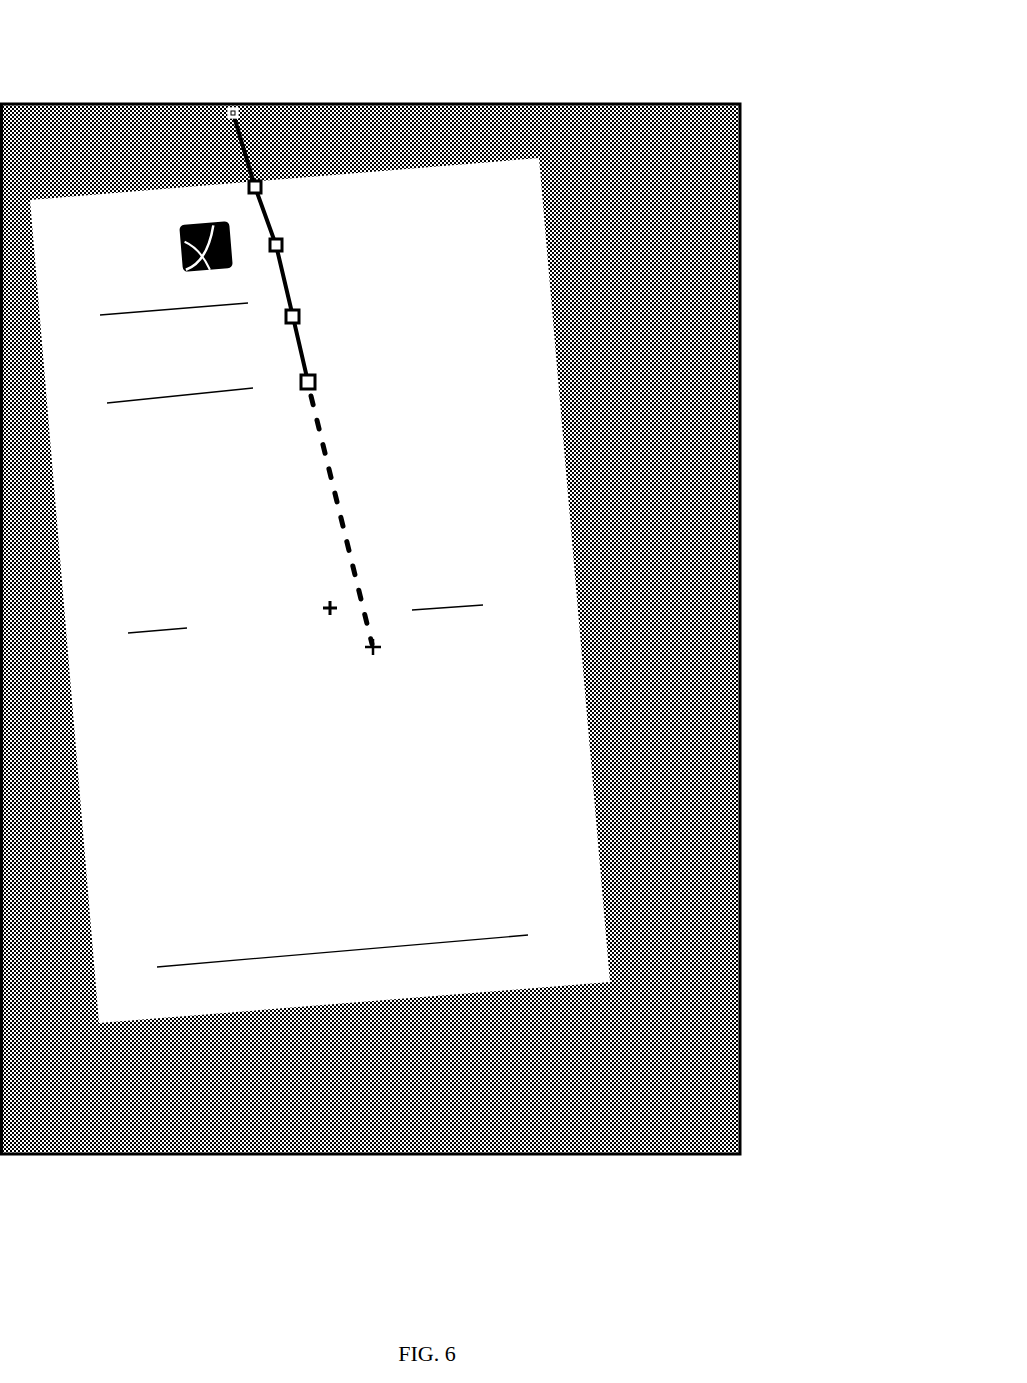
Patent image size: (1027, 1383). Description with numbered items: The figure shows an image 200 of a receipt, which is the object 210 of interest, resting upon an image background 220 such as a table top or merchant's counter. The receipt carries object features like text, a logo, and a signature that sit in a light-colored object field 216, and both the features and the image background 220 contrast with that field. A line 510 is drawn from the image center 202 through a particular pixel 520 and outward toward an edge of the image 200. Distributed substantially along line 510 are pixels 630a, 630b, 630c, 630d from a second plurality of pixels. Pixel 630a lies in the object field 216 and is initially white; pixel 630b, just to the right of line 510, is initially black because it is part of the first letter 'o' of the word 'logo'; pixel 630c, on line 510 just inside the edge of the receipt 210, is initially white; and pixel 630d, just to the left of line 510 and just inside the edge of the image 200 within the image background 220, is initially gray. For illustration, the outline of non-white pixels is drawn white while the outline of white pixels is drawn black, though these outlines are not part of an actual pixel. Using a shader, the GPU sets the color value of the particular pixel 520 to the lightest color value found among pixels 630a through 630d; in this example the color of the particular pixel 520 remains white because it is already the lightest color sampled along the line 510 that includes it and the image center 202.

The image 200 is at (62, 25).
The image center 202 is at (380, 654).
The object 210 is at (592, 780).
The object field 216 is at (525, 547).
The image background 220 is at (665, 707).
The line 510 is at (300, 350).
The particular pixel 520 is at (316, 386).
The second pixel 630a is at (301, 321).
The second pixel 630b is at (283, 247).
The second pixel 630c is at (262, 187).
The second pixel 630d is at (238, 113).